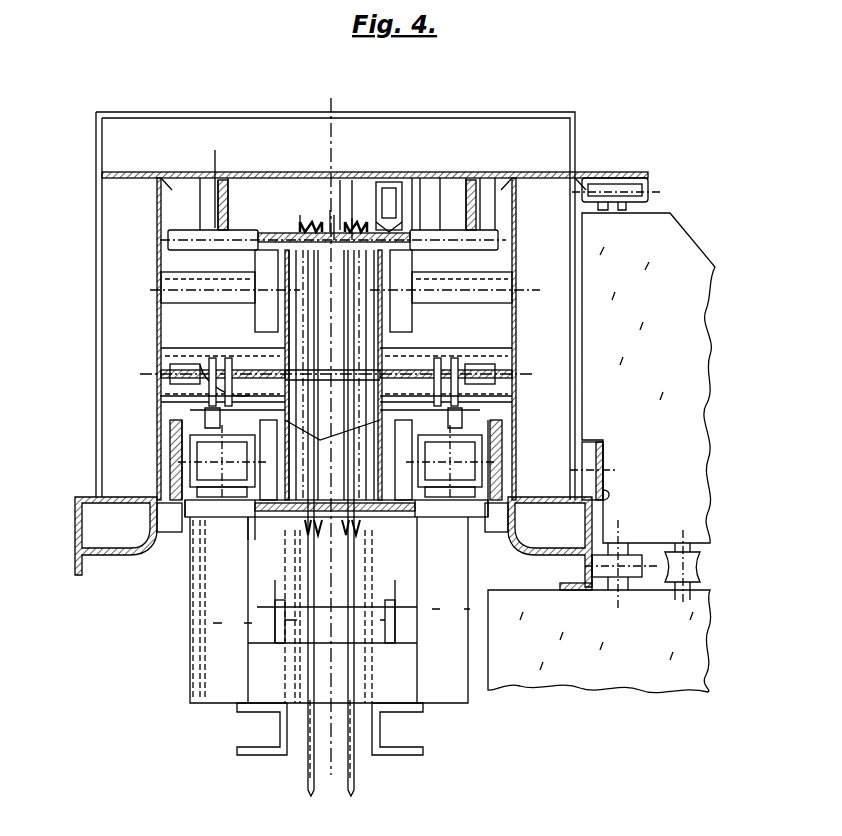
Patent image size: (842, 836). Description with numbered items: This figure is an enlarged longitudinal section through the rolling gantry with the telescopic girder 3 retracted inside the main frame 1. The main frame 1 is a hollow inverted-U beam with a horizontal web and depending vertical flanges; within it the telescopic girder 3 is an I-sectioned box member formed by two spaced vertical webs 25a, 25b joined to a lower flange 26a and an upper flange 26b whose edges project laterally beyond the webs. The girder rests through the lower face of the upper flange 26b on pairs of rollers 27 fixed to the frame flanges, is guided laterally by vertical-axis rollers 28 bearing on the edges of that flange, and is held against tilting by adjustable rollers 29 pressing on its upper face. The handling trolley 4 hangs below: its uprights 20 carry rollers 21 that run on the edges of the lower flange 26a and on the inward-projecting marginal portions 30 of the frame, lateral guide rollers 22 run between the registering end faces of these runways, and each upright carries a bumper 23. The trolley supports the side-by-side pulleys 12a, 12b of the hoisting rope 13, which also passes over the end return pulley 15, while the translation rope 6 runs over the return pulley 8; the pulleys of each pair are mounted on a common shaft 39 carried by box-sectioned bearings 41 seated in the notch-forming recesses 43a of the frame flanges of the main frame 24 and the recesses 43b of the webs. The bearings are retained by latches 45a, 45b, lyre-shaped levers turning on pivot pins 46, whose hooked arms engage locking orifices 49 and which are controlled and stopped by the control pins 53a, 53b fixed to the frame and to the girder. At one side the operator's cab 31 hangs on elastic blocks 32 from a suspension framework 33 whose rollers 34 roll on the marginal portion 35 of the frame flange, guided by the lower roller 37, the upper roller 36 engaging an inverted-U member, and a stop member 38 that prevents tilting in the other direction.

The main frame 1 is at (94, 152).
The telescopic girder 3 is at (282, 228).
The trolley 4 is at (184, 688).
The rope 6 is at (326, 232).
The end return pulley 8 is at (336, 214).
The pulley of the trolley 12a is at (304, 530).
The pulley of the trolley 12b is at (358, 530).
The hoisting rope 13 is at (390, 200).
The end return pulley 15 is at (354, 225).
The upright 20 is at (341, 616).
The wheel or roller 21 is at (532, 480).
The lateral guide roller 22 is at (215, 518).
The bumper 23 is at (160, 480).
The main frame 24 is at (500, 130).
The vertical web 25a is at (225, 291).
The vertical web 25b is at (455, 290).
The lower horizontal flange 26a is at (280, 500).
The upper horizontal flange 26b is at (304, 215).
The roller 27 is at (268, 268).
The roller 28 is at (190, 240).
The roller 29 is at (412, 178).
The marginal portion 30 is at (160, 520).
The operator's control cab 31 is at (642, 680).
The elastic block 32 is at (702, 566).
The suspension framework 33 is at (705, 440).
The roller 34 is at (600, 448).
The longitudinal marginal portion 35 is at (606, 496).
The upper roller 36 is at (620, 185).
The lower roller 37 is at (632, 578).
The stop member 38 is at (578, 592).
The common shaft 39 is at (339, 375).
The supporting bearing 41 is at (285, 353).
The notch-forming recess 43a is at (209, 400).
The notch-forming recess 43b is at (290, 325).
The latch 45a is at (212, 408).
The latch 45b is at (195, 448).
The pivot pin 46 is at (170, 372).
The locking orifice 49 is at (415, 748).
The control pin 53a is at (200, 405).
The control pin 53b is at (320, 440).